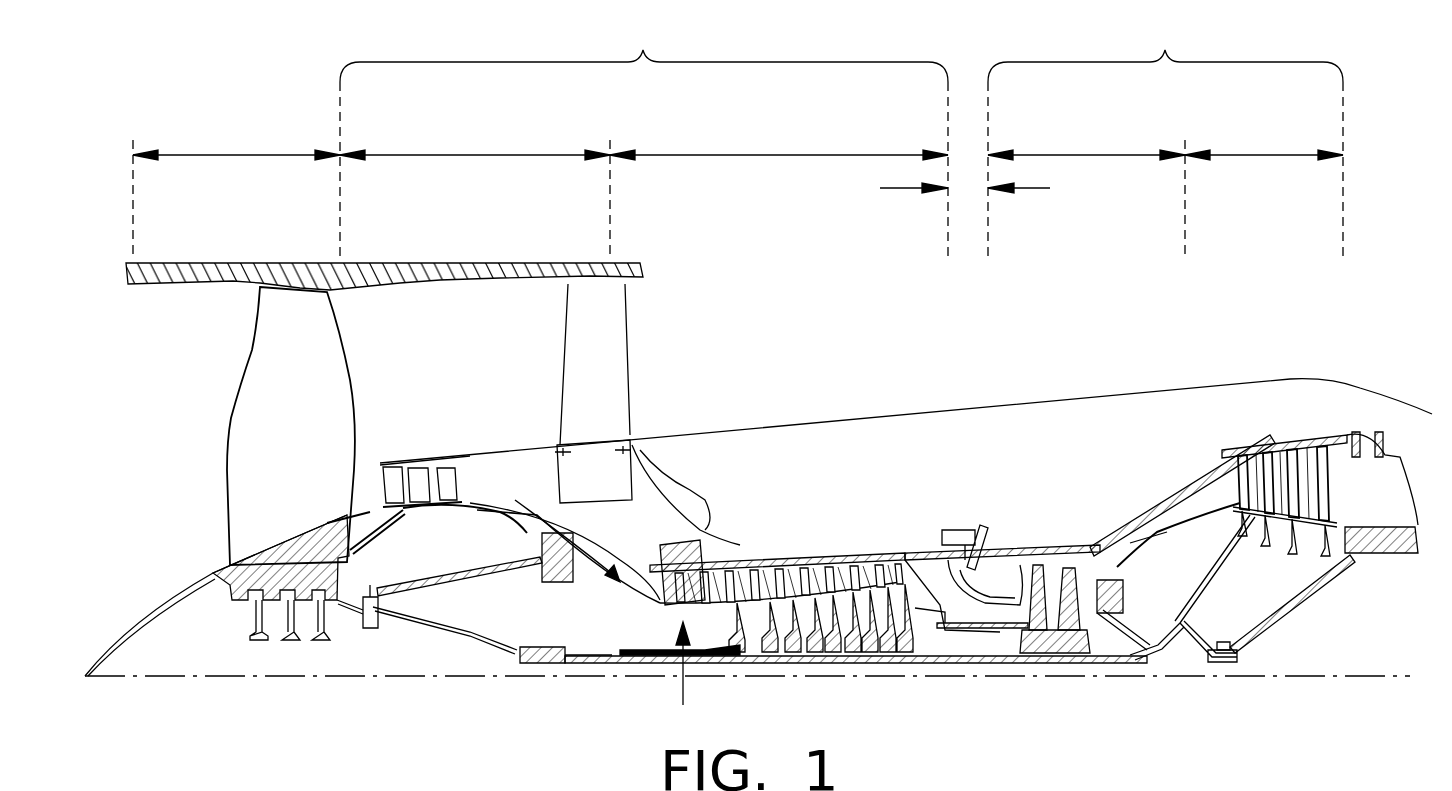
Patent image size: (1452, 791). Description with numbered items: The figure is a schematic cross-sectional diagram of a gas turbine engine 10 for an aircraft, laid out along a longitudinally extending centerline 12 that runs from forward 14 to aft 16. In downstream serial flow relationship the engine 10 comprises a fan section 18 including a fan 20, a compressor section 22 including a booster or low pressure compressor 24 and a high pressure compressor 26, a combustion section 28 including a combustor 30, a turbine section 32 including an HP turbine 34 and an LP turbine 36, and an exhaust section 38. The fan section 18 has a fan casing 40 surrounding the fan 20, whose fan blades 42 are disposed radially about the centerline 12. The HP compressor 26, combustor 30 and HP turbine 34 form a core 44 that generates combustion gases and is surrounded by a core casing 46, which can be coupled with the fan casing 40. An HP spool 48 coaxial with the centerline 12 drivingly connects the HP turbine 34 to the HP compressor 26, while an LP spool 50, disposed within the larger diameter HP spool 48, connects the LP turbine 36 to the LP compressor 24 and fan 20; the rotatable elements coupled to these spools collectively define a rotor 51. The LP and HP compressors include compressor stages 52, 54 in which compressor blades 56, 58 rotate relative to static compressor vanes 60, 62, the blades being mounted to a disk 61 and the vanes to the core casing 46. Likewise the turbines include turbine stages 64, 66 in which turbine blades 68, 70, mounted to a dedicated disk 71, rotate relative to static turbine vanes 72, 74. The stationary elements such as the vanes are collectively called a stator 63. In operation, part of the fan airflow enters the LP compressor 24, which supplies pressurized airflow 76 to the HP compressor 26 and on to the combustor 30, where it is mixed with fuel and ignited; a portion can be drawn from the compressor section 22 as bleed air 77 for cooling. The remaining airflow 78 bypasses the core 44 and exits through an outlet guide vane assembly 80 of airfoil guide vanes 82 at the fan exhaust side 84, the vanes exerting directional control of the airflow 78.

The gas turbine engine 10 is at (1365, 178).
The centerline 12 is at (215, 680).
The forward 14 is at (165, 400).
The aft 16 is at (1450, 498).
The fan section 18 is at (237, 155).
The fan 20 is at (205, 522).
The compressor section 22 is at (643, 50).
The low pressure compressor 24 is at (477, 155).
The high pressure compressor 26 is at (778, 155).
The combustion section 28 is at (893, 188).
The combustor 30 is at (978, 528).
The turbine section 32 is at (1165, 50).
The HP turbine 34 is at (1087, 155).
The LP turbine 36 is at (1262, 155).
The exhaust section 38 is at (1410, 468).
The fan casing 40 is at (373, 263).
The fan blades 42 is at (307, 333).
The core 44 is at (915, 435).
The core casing 46 is at (1168, 490).
The HP spool 48 is at (950, 630).
The LP spool 50 is at (545, 663).
The rotor 51 is at (812, 675).
The compressor stages 52 is at (413, 431).
The compressor stages 54 is at (781, 553).
The compressor blades 56 is at (434, 453).
The compressor blades 58 is at (700, 595).
The static compressor vanes 60 is at (395, 473).
The disk 61 is at (435, 508).
The static compressor vanes 62 is at (672, 580).
The stator 63 is at (683, 700).
The turbine stages 64 is at (1027, 551).
The turbine stages 66 is at (1184, 539).
The turbine blades 68 is at (1055, 576).
The turbine blades 70 is at (1325, 442).
The disk 71 is at (1288, 555).
The static turbine vanes 72 is at (1030, 545).
The static turbine vanes 74 is at (1312, 447).
The pressurized airflow 76 is at (580, 552).
The bleed air 77 is at (755, 600).
The airflow 78 is at (668, 338).
The outlet guide vane assembly 80 is at (650, 395).
The airfoil guide vanes 82 is at (575, 378).
The fan exhaust side 84 is at (655, 308).